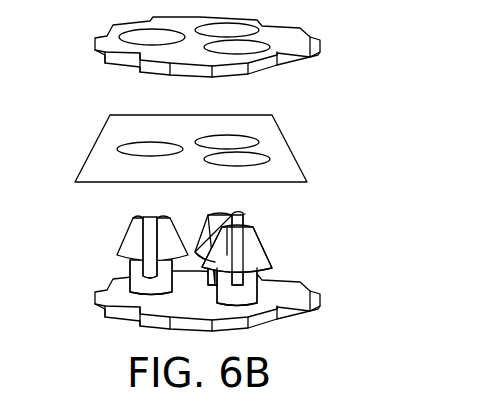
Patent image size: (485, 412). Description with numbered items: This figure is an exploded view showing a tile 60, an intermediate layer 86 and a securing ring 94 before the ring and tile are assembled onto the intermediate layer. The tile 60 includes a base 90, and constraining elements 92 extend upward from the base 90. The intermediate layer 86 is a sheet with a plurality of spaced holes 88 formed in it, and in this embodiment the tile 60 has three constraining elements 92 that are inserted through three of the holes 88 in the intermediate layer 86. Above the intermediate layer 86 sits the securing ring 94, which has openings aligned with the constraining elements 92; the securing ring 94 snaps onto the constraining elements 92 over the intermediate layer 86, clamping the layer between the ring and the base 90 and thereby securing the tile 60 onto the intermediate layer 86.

The tile 60 is at (313, 318).
The intermediate layer 86 is at (102, 167).
The holes 88 is at (150, 145).
The base 90 is at (123, 310).
The constraining elements 92 is at (133, 237).
The securing ring 94 is at (297, 58).